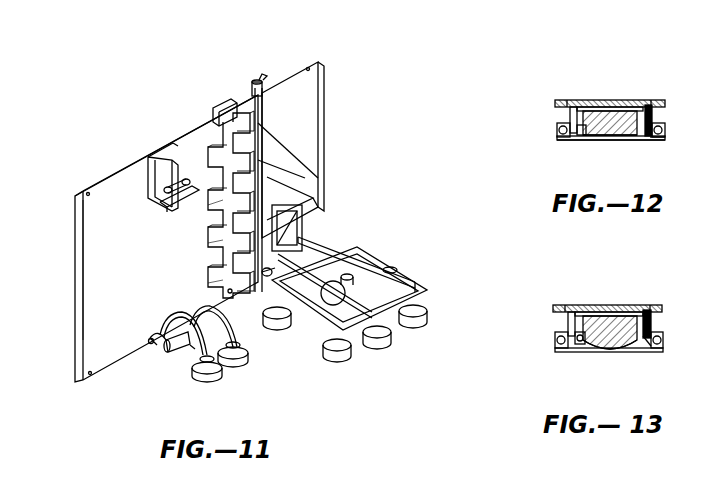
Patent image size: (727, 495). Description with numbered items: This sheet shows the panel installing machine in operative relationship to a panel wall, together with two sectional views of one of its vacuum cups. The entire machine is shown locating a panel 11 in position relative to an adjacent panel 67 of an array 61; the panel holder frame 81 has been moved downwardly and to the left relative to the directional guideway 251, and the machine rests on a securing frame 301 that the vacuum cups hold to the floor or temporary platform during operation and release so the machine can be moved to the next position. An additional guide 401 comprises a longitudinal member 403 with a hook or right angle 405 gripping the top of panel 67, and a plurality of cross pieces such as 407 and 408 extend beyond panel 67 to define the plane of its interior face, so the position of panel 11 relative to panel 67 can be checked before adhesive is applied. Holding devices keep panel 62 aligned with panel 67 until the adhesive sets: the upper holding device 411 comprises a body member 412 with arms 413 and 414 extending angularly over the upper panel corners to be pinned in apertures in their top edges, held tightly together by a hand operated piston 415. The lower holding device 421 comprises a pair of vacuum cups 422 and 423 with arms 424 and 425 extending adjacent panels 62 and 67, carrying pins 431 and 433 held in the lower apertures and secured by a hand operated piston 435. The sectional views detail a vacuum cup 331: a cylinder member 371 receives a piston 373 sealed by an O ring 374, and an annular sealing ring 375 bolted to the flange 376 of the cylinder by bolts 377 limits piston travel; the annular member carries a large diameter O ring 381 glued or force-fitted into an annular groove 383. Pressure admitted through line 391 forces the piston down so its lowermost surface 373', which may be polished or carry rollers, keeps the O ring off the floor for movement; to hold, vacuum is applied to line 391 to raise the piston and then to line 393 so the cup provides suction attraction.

In FIG. 11, the panel 11 is at (290, 73).
In FIG. 11, the array 61 is at (151, 238).
In FIG. 11, the panel 62 is at (98, 202).
In FIG. 11, the panel 67 is at (212, 115).
In FIG. 11, the panel holder frame 81 is at (277, 163).
In FIG. 11, the directional guideway 251 is at (317, 190).
In FIG. 11, the securing frame 301 is at (320, 247).
In FIG. 11, the guide 401 is at (213, 118).
In FIG. 11, the longitudinal member 403 is at (213, 265).
In FIG. 11, the hook 405 is at (225, 107).
In FIG. 11, the cross piece 407 is at (213, 202).
In FIG. 11, the cross piece 408 is at (213, 242).
In FIG. 11, the upper holding device 411 is at (165, 204).
In FIG. 11, the body member 412 is at (168, 205).
In FIG. 11, the arm 413 is at (167, 193).
In FIG. 11, the arm 414 is at (173, 143).
In FIG. 11, the hand operated piston 415 is at (173, 180).
In FIG. 11, the holding device 421 is at (168, 352).
In FIG. 11, the vacuum cup 422 is at (213, 382).
In FIG. 11, the vacuum cup 423 is at (240, 363).
In FIG. 11, the arm 424 is at (157, 333).
In FIG. 11, the arm 425 is at (237, 335).
In FIG. 11, the pin 431 is at (152, 343).
In FIG. 11, the pin 433 is at (167, 320).
In FIG. 11, the hand operated piston 435 is at (192, 350).
In FIG. 12, the vacuum cup 331 is at (660, 139).
In FIG. 12, the cylinder member 371 is at (580, 98).
In FIG. 13, the cylinder member 371 is at (580, 308).
In FIG. 12, the piston 373 is at (621, 138).
In FIG. 13, the piston 373 is at (624, 346).
In FIG. 12, the lowermost surface 373' is at (610, 159).
In FIG. 13, the lowermost surface 373' is at (610, 368).
In FIG. 12, the O ring 374 is at (578, 115).
In FIG. 13, the O ring 374 is at (572, 328).
In FIG. 12, the annular sealing ring 375 is at (580, 135).
In FIG. 13, the annular sealing ring 375 is at (580, 348).
In FIG. 12, the flange 376 is at (560, 127).
In FIG. 13, the flange 376 is at (658, 338).
In FIG. 12, the bolt 377 is at (657, 127).
In FIG. 13, the bolt 377 is at (647, 337).
In FIG. 12, the O ring 381 is at (570, 140).
In FIG. 13, the O ring 381 is at (567, 352).
In FIG. 12, the annular groove 383 is at (562, 137).
In FIG. 13, the annular groove 383 is at (562, 345).
In FIG. 12, the pressure line 391 is at (637, 98).
In FIG. 13, the pressure line 391 is at (633, 307).
In FIG. 12, the line 393 is at (653, 98).
In FIG. 13, the line 393 is at (648, 308).